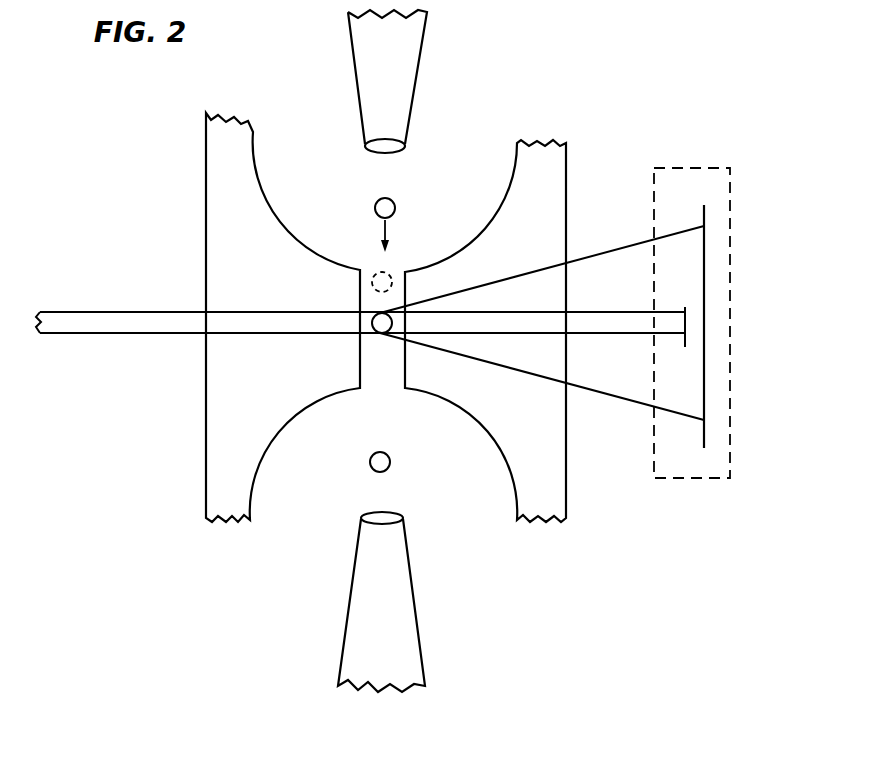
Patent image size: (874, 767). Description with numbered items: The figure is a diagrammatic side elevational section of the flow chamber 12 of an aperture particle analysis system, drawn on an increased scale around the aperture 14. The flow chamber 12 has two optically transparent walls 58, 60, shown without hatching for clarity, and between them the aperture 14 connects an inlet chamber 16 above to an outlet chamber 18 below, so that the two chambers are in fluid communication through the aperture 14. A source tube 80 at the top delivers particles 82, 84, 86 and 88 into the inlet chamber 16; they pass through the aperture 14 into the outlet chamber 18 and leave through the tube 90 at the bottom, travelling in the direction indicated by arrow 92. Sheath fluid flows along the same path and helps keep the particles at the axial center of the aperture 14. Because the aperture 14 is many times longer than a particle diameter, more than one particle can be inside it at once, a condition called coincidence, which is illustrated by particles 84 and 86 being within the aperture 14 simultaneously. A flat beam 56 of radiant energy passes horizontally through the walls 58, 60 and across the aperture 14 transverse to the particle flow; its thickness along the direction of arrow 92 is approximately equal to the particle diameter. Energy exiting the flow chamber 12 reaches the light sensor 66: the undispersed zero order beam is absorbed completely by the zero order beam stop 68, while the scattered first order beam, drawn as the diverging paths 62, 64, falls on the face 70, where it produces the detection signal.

The flow chamber 12 is at (183, 213).
The aperture 14 is at (393, 378).
The inlet chamber 16 is at (460, 157).
The outlet chamber 18 is at (298, 510).
The flat beam 56 is at (145, 333).
The optically transparent wall 58 is at (206, 257).
The optically transparent wall 60 is at (566, 212).
The upper diverging beam path 62 is at (600, 254).
The lower diverging beam path 64 is at (627, 337).
The light sensor 66 is at (702, 172).
The zero order beam stop 68 is at (685, 307).
The face 70 is at (704, 435).
The source tube 80 is at (356, 78).
The particle 82 is at (375, 207).
The particle 84 is at (370, 284).
The particle 86 is at (375, 330).
The particle 88 is at (372, 455).
The tube 90 is at (418, 630).
The arrow 92 is at (386, 228).